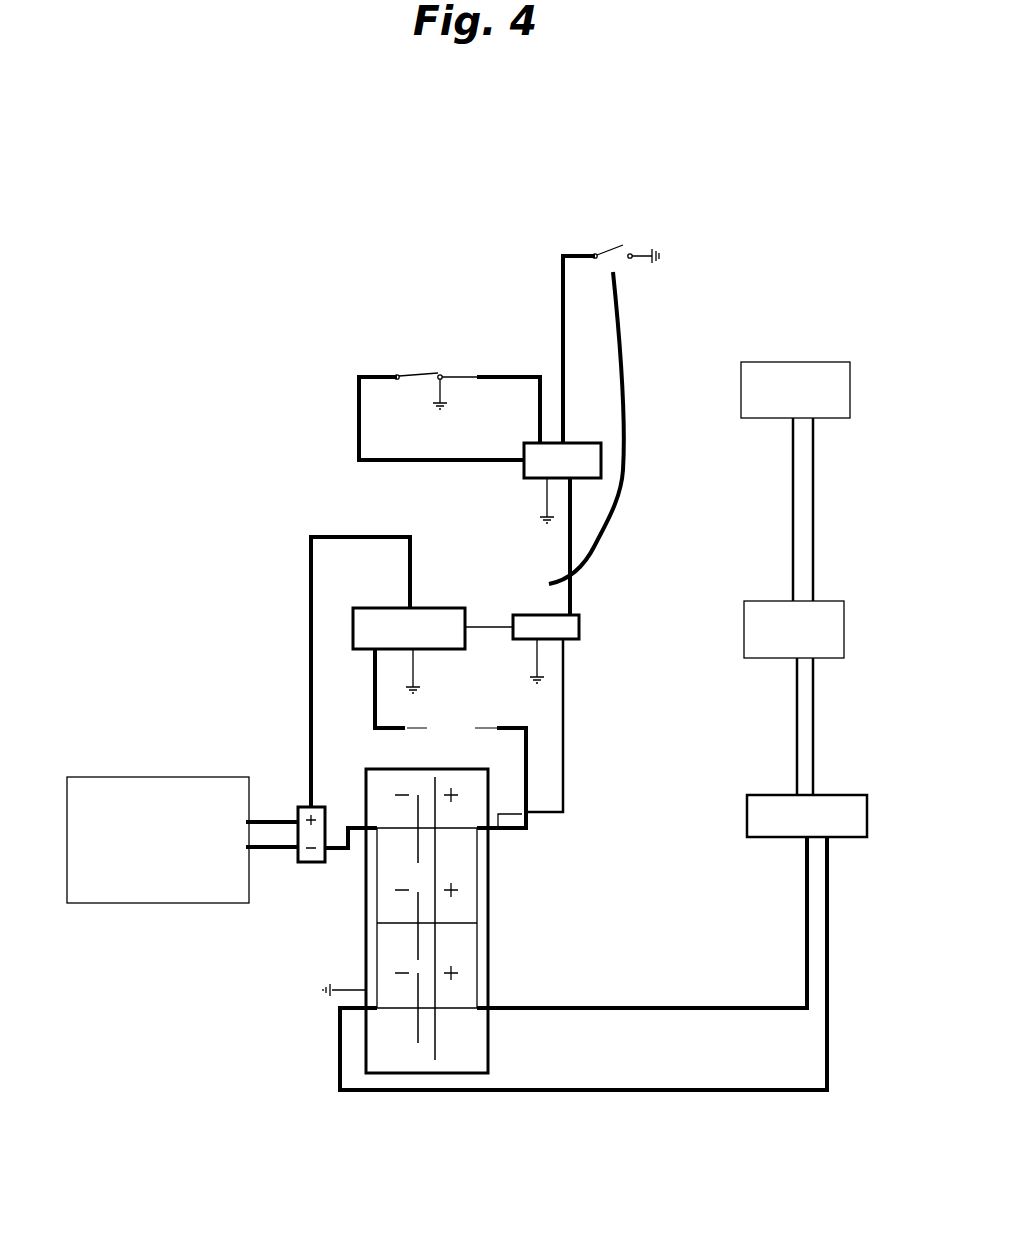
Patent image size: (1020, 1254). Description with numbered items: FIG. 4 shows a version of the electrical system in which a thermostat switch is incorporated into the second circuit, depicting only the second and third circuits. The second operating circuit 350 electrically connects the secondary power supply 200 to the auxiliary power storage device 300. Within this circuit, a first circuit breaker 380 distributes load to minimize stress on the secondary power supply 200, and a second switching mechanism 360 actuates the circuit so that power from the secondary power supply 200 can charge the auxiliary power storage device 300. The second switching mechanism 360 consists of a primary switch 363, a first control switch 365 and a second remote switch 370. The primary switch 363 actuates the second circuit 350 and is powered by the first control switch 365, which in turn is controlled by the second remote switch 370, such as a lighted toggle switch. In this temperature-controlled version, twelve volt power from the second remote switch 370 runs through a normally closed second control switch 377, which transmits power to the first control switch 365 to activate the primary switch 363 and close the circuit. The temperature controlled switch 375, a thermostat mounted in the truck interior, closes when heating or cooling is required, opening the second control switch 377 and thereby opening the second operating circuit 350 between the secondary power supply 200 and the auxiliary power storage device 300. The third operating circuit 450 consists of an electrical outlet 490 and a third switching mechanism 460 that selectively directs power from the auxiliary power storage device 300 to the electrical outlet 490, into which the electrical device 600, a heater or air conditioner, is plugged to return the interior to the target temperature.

The secondary power supply 200 is at (183, 786).
The auxiliary power storage device 300 is at (366, 938).
The second operating circuit 350 is at (274, 442).
The second switching mechanism 360 is at (547, 573).
The primary switch 363 is at (432, 608).
The first control switch 365 is at (518, 613).
The second remote switch 370 is at (546, 630).
The temperature controlled switch 375 is at (410, 376).
The second control switch 377 is at (516, 478).
The first circuit breaker 380 is at (475, 716).
The third operating circuit 450 is at (673, 945).
The third switching mechanism 460 is at (746, 812).
The electrical outlet 490 is at (752, 600).
The electrical device 600 is at (770, 360).